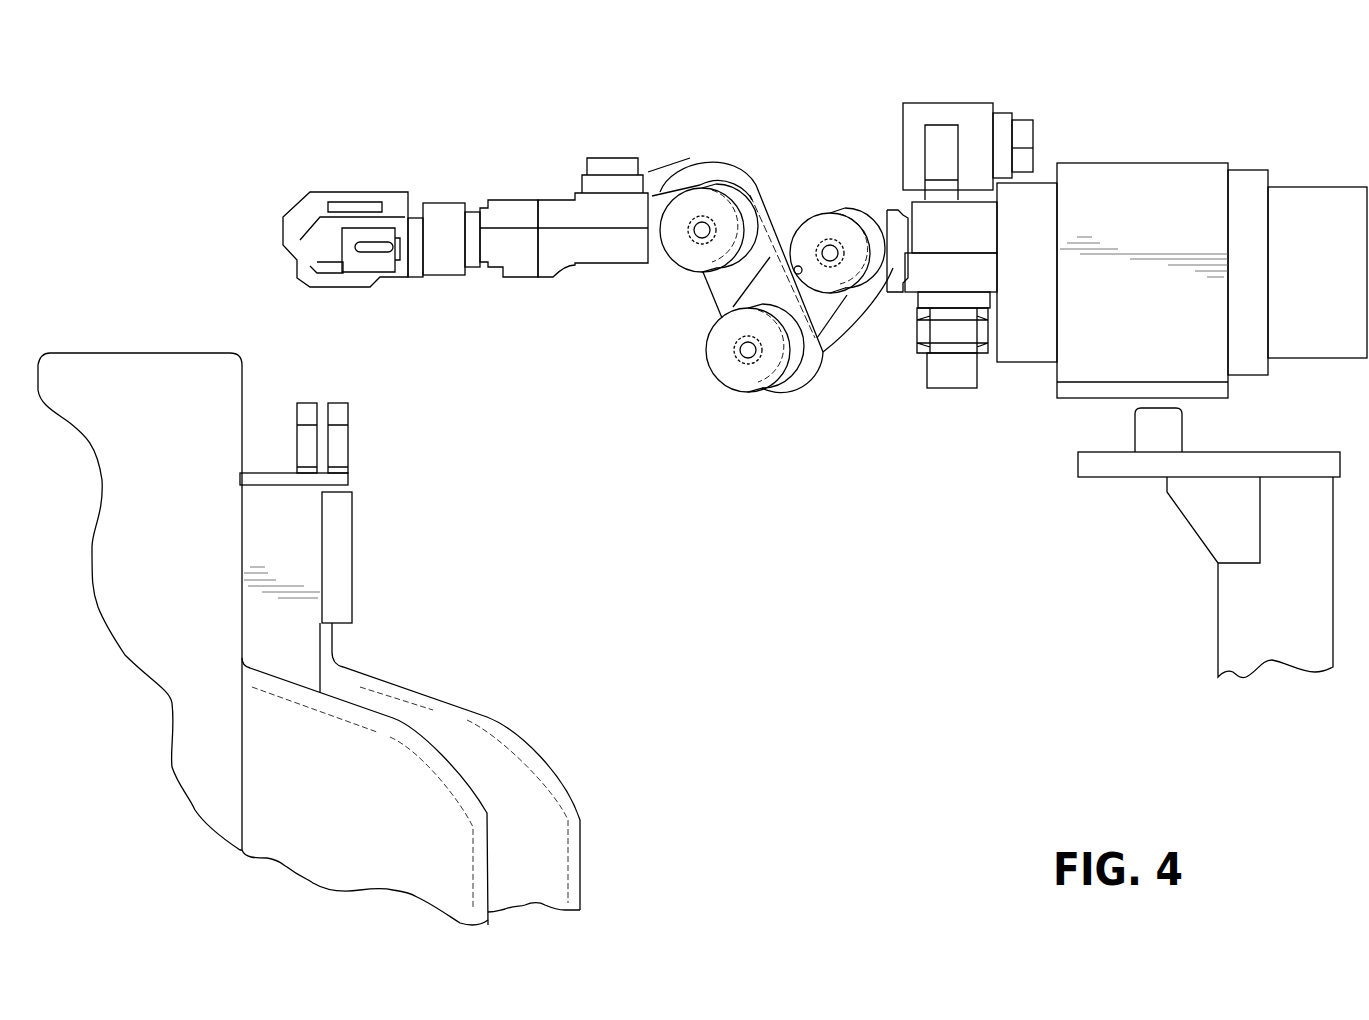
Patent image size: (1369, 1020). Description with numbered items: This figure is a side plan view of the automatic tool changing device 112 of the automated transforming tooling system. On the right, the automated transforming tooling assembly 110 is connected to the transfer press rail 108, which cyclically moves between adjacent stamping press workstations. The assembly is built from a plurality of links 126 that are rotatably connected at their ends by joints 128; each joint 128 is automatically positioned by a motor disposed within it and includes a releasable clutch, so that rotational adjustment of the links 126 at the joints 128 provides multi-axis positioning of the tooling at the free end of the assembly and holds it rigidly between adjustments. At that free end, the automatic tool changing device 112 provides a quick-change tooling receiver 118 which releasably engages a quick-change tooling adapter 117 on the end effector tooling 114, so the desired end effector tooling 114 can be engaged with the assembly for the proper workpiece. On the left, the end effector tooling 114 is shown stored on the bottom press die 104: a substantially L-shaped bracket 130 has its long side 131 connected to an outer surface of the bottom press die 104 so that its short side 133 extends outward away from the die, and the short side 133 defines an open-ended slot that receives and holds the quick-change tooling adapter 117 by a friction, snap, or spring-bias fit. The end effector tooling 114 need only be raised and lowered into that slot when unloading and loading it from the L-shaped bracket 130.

The bottom press die 104 is at (570, 790).
The transfer press rail 108 is at (1082, 172).
The automated transforming tooling assembly 110 is at (731, 328).
The automatic tool changing device 112 is at (465, 213).
The end effector tooling 114 is at (445, 262).
The quick-change tooling adapter 117 is at (515, 268).
The quick-change tooling receiver 118 is at (555, 278).
The links 126 is at (720, 285).
The joints 128 is at (703, 198).
The L-shaped bracket 130 is at (363, 467).
The long side 131 is at (252, 475).
The short side 133 is at (343, 432).